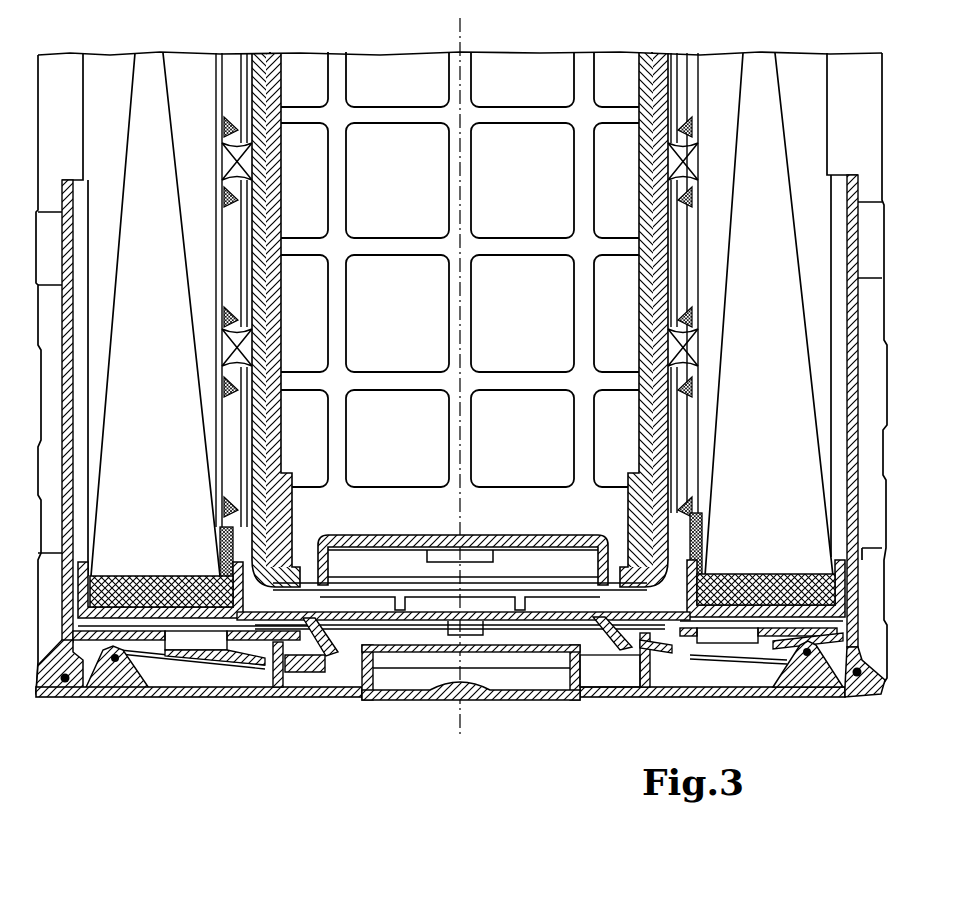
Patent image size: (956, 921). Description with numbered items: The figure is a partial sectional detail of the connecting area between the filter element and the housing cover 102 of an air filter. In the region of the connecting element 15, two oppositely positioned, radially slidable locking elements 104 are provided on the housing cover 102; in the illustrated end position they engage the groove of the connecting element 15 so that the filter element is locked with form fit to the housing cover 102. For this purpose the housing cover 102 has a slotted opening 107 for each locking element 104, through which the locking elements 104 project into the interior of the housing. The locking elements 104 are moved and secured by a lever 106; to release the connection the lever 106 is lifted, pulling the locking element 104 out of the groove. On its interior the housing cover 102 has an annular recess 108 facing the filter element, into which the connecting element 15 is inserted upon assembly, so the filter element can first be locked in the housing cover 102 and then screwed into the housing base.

The connecting element 15 is at (316, 664).
The housing cover 102 is at (393, 701).
The locking element 104 is at (626, 631).
The lever 106 is at (823, 672).
The slotted opening 107 is at (294, 630).
The annular recess 108 is at (610, 684).